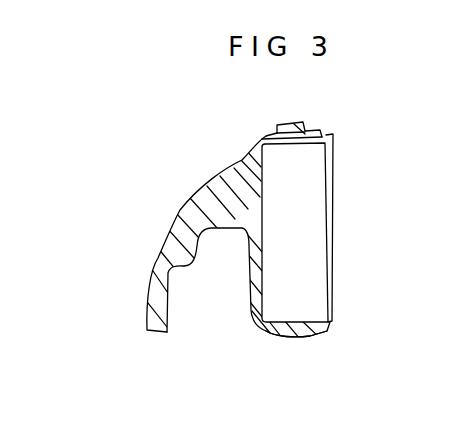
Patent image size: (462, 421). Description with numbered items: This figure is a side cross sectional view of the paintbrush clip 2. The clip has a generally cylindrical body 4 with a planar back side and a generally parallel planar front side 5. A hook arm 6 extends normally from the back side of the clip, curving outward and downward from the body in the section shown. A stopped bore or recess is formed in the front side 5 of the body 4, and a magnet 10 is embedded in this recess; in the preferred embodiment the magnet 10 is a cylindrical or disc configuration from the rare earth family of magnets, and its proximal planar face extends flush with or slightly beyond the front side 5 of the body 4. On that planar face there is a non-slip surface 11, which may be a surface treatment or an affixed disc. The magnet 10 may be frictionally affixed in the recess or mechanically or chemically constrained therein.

The paintbrush clip 2 is at (228, 242).
The body 4 is at (300, 338).
The front side 5 is at (325, 131).
The hook arm 6 is at (160, 245).
The magnet 10 is at (315, 228).
The non-slip surface 11 is at (334, 158).